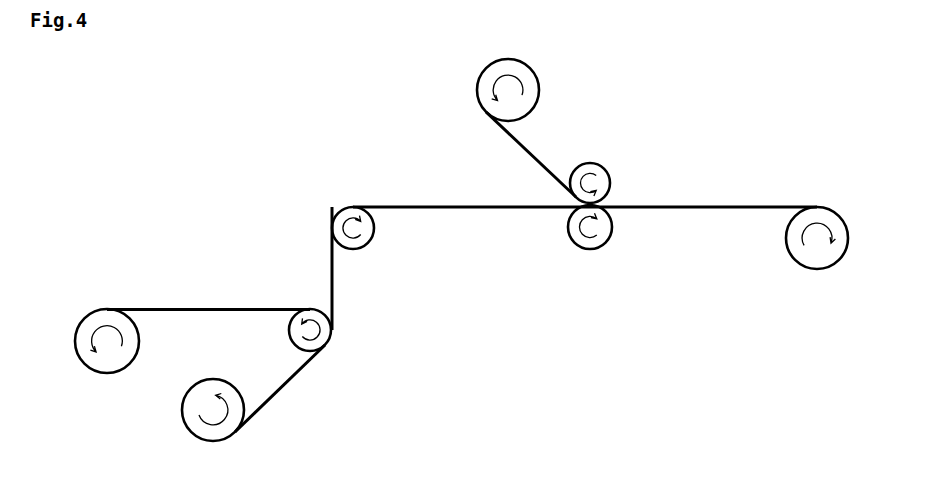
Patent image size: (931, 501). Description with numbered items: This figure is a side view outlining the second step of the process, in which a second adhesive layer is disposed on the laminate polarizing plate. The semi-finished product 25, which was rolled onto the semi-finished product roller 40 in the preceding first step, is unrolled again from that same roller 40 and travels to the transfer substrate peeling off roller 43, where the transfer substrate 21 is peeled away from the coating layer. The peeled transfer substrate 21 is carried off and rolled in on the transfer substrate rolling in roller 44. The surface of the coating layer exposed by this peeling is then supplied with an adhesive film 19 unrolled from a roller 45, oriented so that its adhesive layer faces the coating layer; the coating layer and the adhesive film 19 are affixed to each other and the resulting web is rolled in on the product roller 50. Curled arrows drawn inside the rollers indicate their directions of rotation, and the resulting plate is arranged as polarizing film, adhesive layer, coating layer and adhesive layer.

The transfer substrate rolling in roller 44 is at (85, 330).
The transfer substrate 21 is at (203, 310).
The transfer substrate peeling off roller 43 is at (297, 330).
The semi-finished product roller 40 is at (193, 417).
The semi-finished product 25 is at (283, 388).
The roller 45 is at (523, 97).
The adhesive film 19 is at (530, 150).
The product roller 50 is at (815, 258).